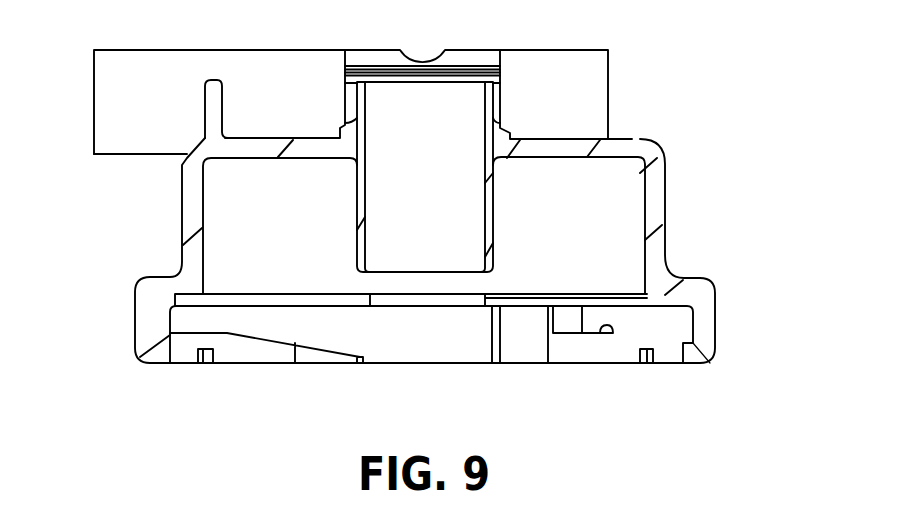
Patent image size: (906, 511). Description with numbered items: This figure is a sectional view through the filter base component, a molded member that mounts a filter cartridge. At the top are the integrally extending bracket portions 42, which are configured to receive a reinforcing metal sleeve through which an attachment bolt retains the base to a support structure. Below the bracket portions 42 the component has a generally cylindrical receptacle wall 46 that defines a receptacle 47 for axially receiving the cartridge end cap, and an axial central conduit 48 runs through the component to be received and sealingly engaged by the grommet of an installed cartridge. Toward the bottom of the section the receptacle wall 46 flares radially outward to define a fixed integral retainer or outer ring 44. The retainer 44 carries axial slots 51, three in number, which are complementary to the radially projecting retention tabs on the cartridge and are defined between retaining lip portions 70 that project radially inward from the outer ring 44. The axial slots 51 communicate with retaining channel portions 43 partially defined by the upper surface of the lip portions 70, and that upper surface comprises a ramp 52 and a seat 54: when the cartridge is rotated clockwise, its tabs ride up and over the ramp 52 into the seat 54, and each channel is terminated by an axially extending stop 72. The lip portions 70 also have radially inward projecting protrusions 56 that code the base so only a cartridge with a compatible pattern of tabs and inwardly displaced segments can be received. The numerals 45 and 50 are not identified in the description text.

The bracket portions 42 is at (582, 95).
The retaining channel portions 43 is at (262, 323).
The outer ring 44 is at (620, 335).
The cylinder bore 45 is at (390, 100).
The receptacle wall 46 is at (655, 215).
The receptacle 47 is at (296, 213).
The axial central conduit 48 is at (363, 237).
The base plate 50 is at (250, 353).
The axial slots 51 is at (447, 347).
The ramp 52 is at (303, 342).
The seat 54 is at (617, 337).
The protrusions 56 is at (208, 367).
The retaining lip portions 70 is at (582, 353).
The axially extending stop 72 is at (522, 320).